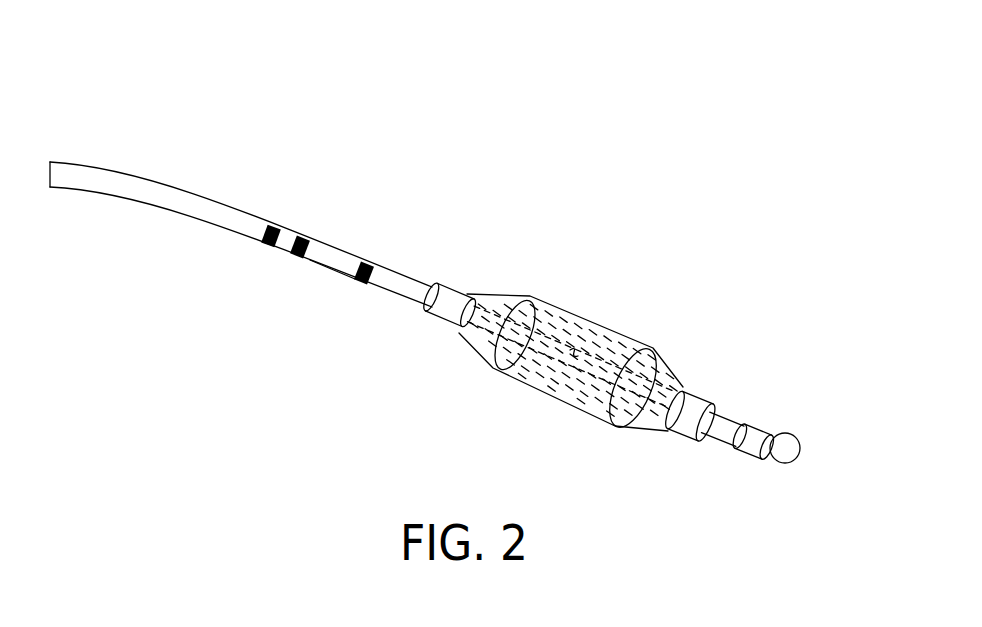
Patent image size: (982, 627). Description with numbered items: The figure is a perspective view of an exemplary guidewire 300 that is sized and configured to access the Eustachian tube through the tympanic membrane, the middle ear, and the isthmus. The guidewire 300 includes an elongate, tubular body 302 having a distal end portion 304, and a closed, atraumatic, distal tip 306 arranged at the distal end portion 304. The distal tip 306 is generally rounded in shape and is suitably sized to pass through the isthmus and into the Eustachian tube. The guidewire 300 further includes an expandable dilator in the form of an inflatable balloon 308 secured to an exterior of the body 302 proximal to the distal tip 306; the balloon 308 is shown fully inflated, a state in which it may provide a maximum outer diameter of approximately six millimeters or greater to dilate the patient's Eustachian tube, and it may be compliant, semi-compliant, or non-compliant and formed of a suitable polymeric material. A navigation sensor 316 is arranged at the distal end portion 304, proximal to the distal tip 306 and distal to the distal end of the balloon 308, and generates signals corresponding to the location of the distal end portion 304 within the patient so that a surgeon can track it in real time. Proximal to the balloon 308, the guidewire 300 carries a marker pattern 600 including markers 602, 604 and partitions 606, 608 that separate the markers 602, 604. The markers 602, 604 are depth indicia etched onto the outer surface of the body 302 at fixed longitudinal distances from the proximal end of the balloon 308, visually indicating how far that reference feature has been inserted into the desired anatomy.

The guidewire 300 is at (188, 100).
The body 302 is at (182, 197).
The distal end portion 304 is at (755, 398).
The distal tip 306 is at (792, 463).
The inflatable balloon 308 is at (593, 323).
The navigation sensor 316 is at (747, 443).
The marker pattern 600 is at (432, 153).
The marker 602 is at (372, 262).
The marker 604 is at (282, 223).
The partition 606 is at (382, 292).
The partition 608 is at (325, 272).